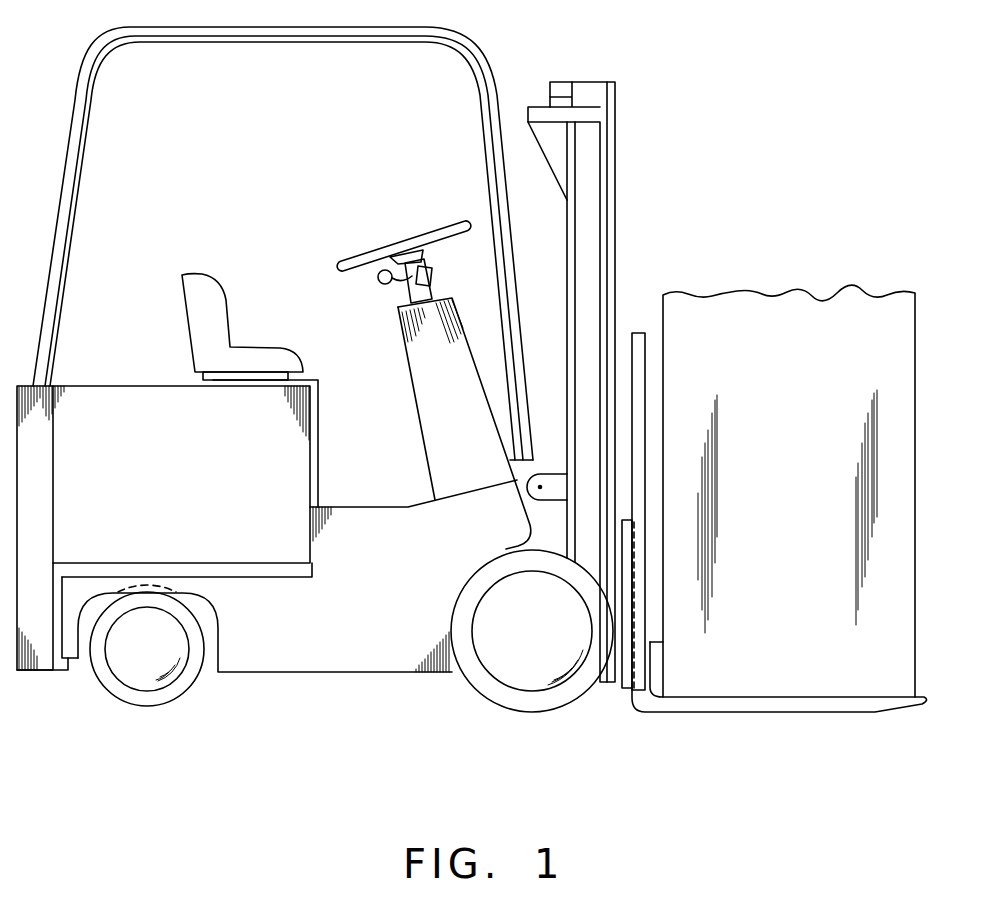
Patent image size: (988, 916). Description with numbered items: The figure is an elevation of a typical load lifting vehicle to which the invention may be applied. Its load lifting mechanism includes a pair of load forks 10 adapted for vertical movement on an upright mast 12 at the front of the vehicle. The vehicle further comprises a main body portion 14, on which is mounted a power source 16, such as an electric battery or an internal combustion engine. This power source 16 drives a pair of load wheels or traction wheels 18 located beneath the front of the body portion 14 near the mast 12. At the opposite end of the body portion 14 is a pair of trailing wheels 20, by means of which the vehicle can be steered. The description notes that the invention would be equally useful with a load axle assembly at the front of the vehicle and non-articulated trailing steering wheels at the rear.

The load forks 10 is at (663, 642).
The mast 12 is at (643, 180).
The main body portion 14 is at (332, 673).
The power source 16 is at (150, 386).
The load wheels 18 is at (553, 710).
The trailing wheels 20 is at (178, 693).